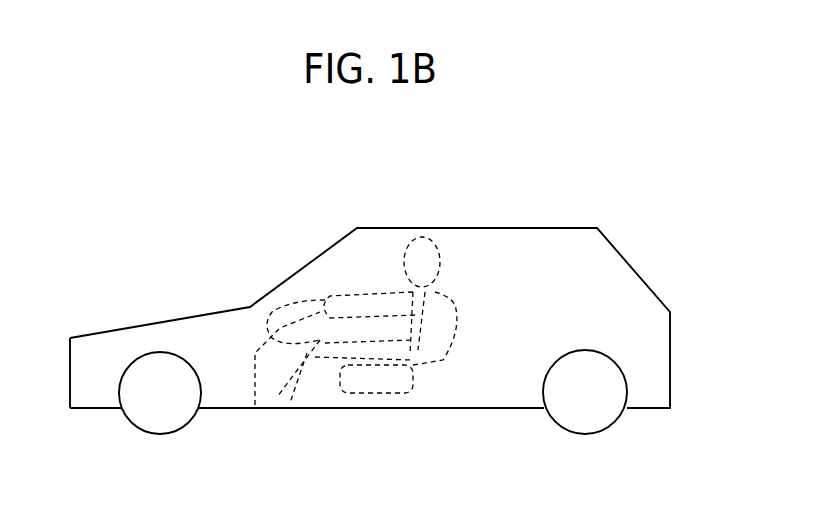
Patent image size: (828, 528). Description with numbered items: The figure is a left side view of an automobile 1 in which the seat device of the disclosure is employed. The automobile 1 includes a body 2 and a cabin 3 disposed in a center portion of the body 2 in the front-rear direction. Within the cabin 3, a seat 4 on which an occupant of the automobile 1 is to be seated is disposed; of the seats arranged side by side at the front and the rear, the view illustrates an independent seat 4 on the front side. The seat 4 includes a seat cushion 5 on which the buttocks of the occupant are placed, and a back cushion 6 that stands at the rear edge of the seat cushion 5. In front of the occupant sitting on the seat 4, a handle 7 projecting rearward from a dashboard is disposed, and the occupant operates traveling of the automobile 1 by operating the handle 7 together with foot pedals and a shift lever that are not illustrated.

The automobile 1 is at (370, 297).
The body 2 is at (236, 388).
The cabin 3 is at (542, 248).
The seat 4 is at (437, 390).
The seat cushion 5 is at (408, 392).
The back cushion 6 is at (440, 343).
The handle 7 is at (316, 293).